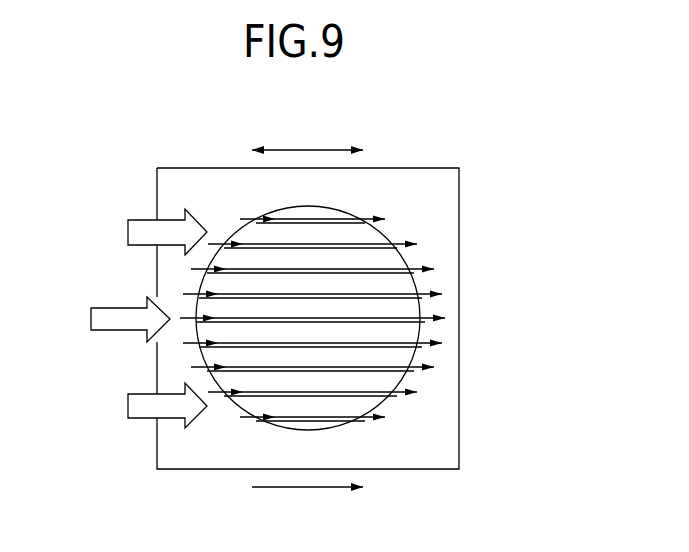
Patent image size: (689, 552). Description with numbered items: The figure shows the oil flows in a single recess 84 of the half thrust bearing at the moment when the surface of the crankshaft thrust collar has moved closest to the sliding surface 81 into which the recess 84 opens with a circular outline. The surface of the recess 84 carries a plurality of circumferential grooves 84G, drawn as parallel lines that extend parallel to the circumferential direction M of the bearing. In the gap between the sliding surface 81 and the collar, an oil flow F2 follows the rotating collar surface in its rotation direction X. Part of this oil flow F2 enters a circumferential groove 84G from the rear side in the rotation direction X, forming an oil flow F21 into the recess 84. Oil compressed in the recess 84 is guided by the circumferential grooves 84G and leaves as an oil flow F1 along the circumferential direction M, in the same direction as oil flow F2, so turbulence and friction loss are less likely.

The sliding surface 81 is at (447, 205).
The recess 84 is at (332, 207).
The circumferential grooves 84G is at (256, 273).
The oil flow F2 is at (140, 405).
The oil flow F21 is at (220, 385).
The oil flow F1 is at (400, 382).
The circumferential direction M is at (307, 136).
The rotation direction X is at (307, 501).